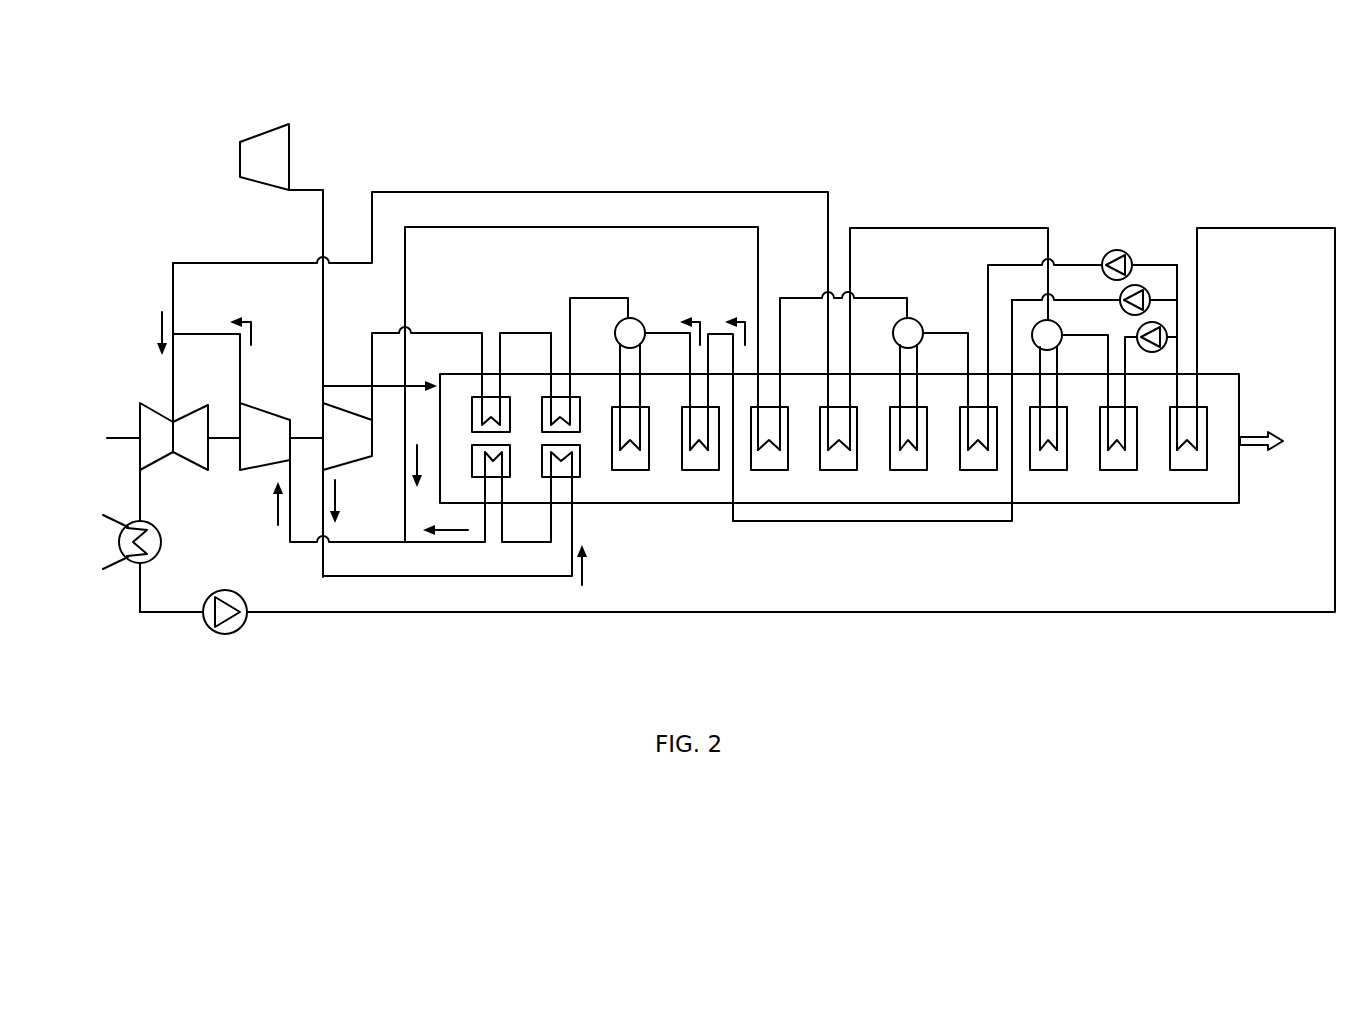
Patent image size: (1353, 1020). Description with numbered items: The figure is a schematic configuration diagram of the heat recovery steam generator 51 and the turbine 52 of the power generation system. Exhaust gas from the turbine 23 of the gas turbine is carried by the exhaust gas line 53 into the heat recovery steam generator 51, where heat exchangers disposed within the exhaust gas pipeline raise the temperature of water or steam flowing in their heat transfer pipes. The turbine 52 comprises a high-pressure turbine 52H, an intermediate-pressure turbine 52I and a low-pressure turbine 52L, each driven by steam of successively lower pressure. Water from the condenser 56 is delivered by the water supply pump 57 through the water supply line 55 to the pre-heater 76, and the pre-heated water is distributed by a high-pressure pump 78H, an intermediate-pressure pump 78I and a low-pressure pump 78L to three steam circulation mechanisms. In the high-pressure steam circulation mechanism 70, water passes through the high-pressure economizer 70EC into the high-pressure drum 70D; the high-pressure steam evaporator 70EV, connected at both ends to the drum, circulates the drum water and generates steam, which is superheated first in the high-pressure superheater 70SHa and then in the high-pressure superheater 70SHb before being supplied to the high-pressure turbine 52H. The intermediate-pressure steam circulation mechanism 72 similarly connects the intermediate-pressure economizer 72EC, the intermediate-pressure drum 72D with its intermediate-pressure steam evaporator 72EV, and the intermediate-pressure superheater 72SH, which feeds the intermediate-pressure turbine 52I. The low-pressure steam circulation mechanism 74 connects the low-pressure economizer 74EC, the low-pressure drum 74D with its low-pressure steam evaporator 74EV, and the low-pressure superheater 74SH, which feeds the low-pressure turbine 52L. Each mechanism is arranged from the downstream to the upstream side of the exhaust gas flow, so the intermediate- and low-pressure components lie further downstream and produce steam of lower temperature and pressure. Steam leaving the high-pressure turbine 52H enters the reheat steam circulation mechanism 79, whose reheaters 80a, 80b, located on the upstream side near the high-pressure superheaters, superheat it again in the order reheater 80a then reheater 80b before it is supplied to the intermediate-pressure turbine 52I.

The turbine 23 is at (240, 158).
The exhaust gas line 53 is at (322, 228).
The turbine 52 is at (269, 386).
The low-pressure turbine 52L is at (140, 412).
The intermediate-pressure turbine 52I is at (255, 470).
The high-pressure turbine 52H is at (362, 468).
The condenser 56 is at (162, 540).
The water supply pump 57 is at (225, 634).
The water supply line 55 is at (737, 613).
The reheat steam circulation mechanism 79 is at (446, 598).
The reheater 80a is at (580, 460).
The reheater 80b is at (510, 460).
The high-pressure steam circulation mechanism 70 is at (596, 286).
The high-pressure superheater 70SHa is at (542, 413).
The high-pressure superheater 70SHb is at (472, 412).
The high-pressure drum 70D is at (644, 324).
The high-pressure steam evaporator 70EV is at (630, 470).
The high-pressure economizer 70EC is at (700, 470).
The intermediate-pressure steam circulation mechanism 72 is at (873, 287).
The intermediate-pressure superheater 72SH is at (769, 470).
The intermediate-pressure drum 72D is at (918, 323).
The intermediate-pressure steam evaporator 72EV is at (908, 470).
The intermediate-pressure economizer 72EC is at (978, 470).
The low-pressure steam circulation mechanism 74 is at (955, 216).
The low-pressure superheater 74SH is at (838, 470).
The low-pressure drum 74D is at (1062, 320).
The low-pressure steam evaporator 74EV is at (1048, 470).
The low-pressure economizer 74EC is at (1118, 470).
The pre-heater 76 is at (1188, 470).
The intermediate-pressure pump 78I is at (1130, 256).
The high-pressure pump 78H is at (1150, 291).
The low-pressure pump 78L is at (1167, 330).
The heat recovery steam generator 51 is at (1240, 487).